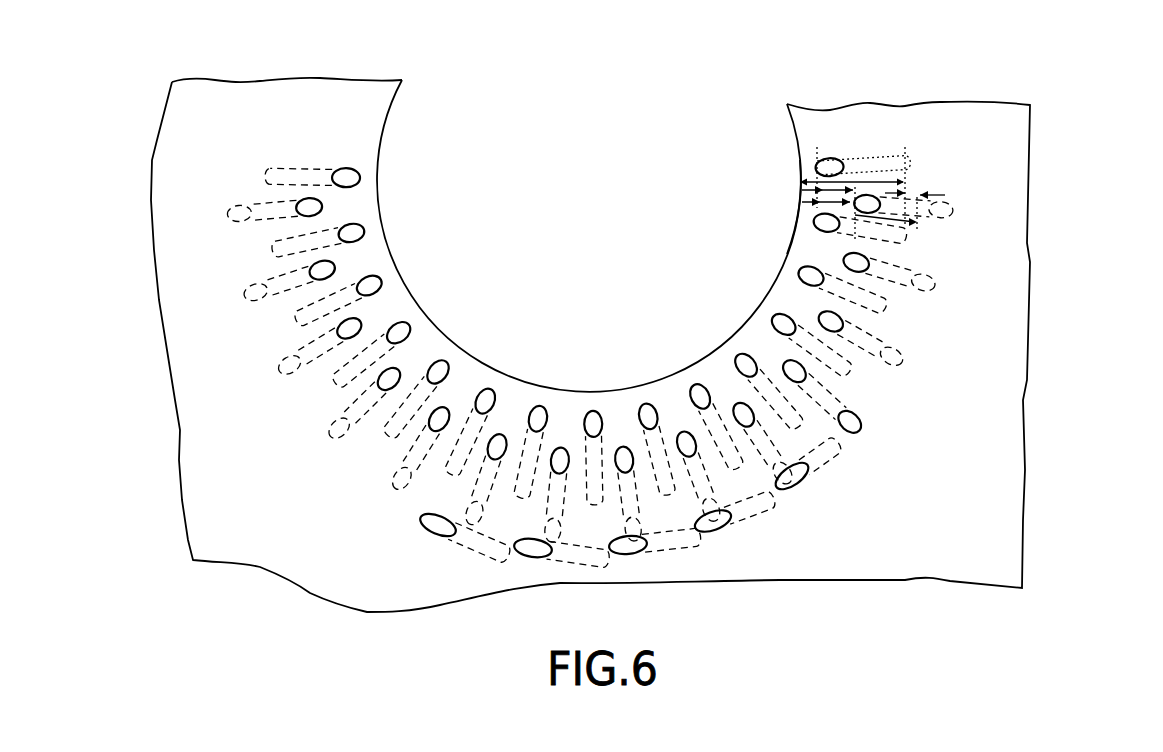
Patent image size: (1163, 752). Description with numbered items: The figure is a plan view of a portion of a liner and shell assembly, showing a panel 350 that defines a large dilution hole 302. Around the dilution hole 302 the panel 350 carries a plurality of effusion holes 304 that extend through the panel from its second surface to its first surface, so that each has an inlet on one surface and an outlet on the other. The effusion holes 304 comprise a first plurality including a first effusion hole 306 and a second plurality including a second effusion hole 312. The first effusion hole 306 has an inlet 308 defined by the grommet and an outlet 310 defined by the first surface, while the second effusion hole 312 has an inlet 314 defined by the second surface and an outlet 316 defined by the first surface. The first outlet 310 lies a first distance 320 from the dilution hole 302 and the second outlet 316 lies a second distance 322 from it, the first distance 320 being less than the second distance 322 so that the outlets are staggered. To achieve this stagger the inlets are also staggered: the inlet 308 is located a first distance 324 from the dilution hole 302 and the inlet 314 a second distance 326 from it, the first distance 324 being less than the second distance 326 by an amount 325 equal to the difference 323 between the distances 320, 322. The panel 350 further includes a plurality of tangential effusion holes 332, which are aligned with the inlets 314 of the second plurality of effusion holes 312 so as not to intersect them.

The dilution hole 302 is at (635, 138).
The effusion holes 304 is at (414, 474).
The first effusion hole 306 is at (294, 170).
The inlet 308 is at (266, 178).
The outlet 310 is at (348, 178).
The second effusion hole 312 is at (267, 225).
The inlet 314 is at (232, 219).
The outlet 316 is at (308, 210).
The first distance 320 is at (801, 170).
The second distance 322 is at (802, 203).
The difference 323 is at (802, 190).
The first distance 324 is at (857, 178).
The amount 325 is at (915, 193).
The second distance 326 is at (890, 218).
The tangential effusion holes 332 is at (486, 553).
The panel 350 is at (1007, 347).